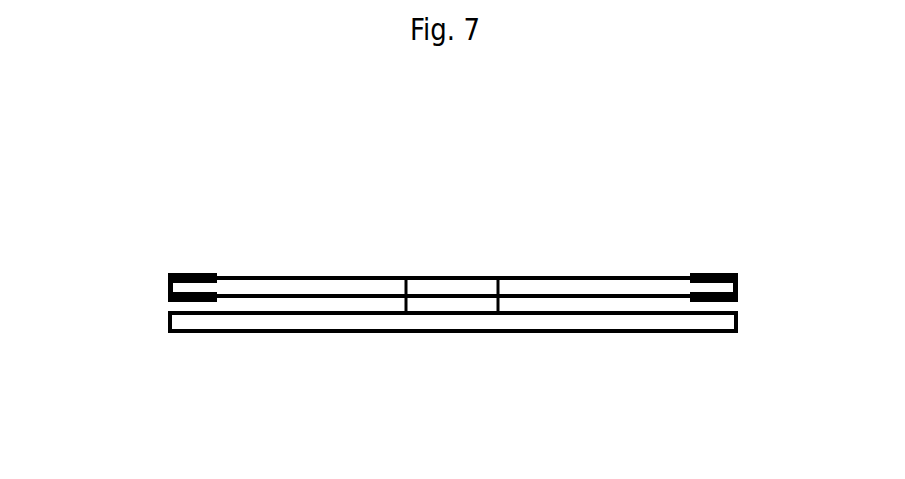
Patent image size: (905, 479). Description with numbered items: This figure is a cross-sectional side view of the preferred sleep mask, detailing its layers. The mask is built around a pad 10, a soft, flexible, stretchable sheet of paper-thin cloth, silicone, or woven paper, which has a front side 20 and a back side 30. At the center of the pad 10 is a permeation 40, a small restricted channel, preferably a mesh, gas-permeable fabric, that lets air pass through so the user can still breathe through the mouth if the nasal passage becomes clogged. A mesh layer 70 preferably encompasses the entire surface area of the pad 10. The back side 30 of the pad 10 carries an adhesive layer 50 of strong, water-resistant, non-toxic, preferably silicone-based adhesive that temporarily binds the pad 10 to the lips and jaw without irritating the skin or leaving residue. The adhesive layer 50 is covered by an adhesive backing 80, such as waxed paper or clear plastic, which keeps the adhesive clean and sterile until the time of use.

The pad 10 is at (418, 306).
The front side 20 is at (418, 299).
The back side 30 is at (453, 380).
The permeation 40 is at (437, 287).
The adhesive layer 50 is at (235, 302).
The mesh layer 70 is at (652, 285).
The adhesive backing 80 is at (355, 322).